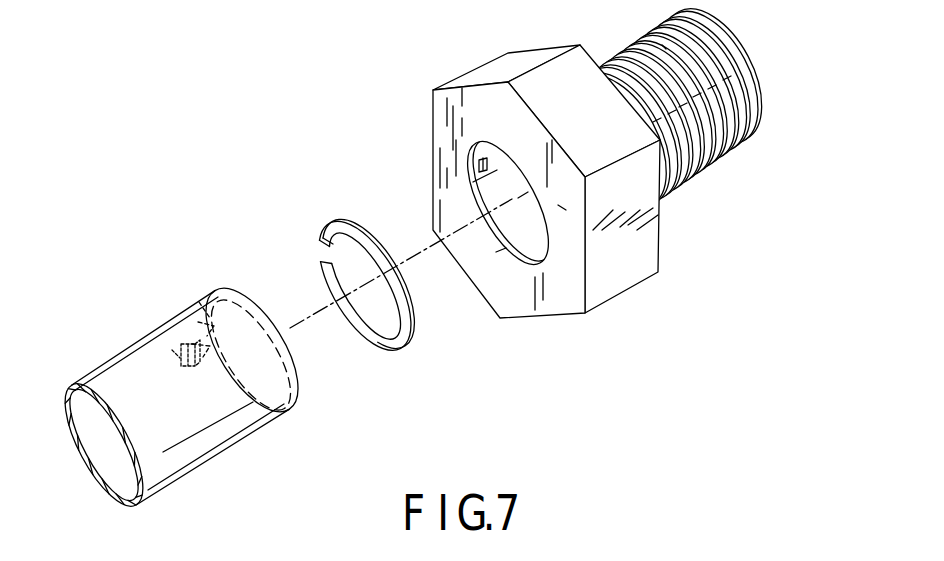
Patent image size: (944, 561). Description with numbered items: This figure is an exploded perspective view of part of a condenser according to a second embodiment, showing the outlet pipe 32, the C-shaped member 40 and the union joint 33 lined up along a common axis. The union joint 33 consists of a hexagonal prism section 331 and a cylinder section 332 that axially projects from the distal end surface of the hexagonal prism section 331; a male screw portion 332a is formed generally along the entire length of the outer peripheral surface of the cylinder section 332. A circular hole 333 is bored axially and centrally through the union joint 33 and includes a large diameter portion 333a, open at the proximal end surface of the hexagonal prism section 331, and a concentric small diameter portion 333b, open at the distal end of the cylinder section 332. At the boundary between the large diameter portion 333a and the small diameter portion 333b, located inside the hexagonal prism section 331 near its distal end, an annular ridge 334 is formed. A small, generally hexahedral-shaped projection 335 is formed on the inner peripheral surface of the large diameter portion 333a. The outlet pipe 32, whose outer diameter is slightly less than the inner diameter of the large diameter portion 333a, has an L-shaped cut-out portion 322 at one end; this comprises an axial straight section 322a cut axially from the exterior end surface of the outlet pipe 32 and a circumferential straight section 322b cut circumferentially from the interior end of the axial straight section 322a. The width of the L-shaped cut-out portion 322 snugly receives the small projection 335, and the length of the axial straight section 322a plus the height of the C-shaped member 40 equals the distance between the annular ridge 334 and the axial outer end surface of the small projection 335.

The outlet pipe 32 is at (183, 390).
The L-shaped cut-out portion 322 is at (199, 302).
The axial straight section 322a is at (182, 346).
The circumferential straight section 322b is at (172, 350).
The C-shaped member 40 is at (341, 222).
The union joint 33 is at (581, 191).
The hexagonal prism section 331 is at (607, 292).
The cylinder section 332 is at (653, 120).
The male screw portion 332a is at (662, 45).
The circular hole 333 is at (523, 231).
The large diameter portion 333a is at (503, 249).
The small diameter portion 333b is at (562, 207).
The annular ridge 334 is at (525, 193).
The small projection 335 is at (483, 166).